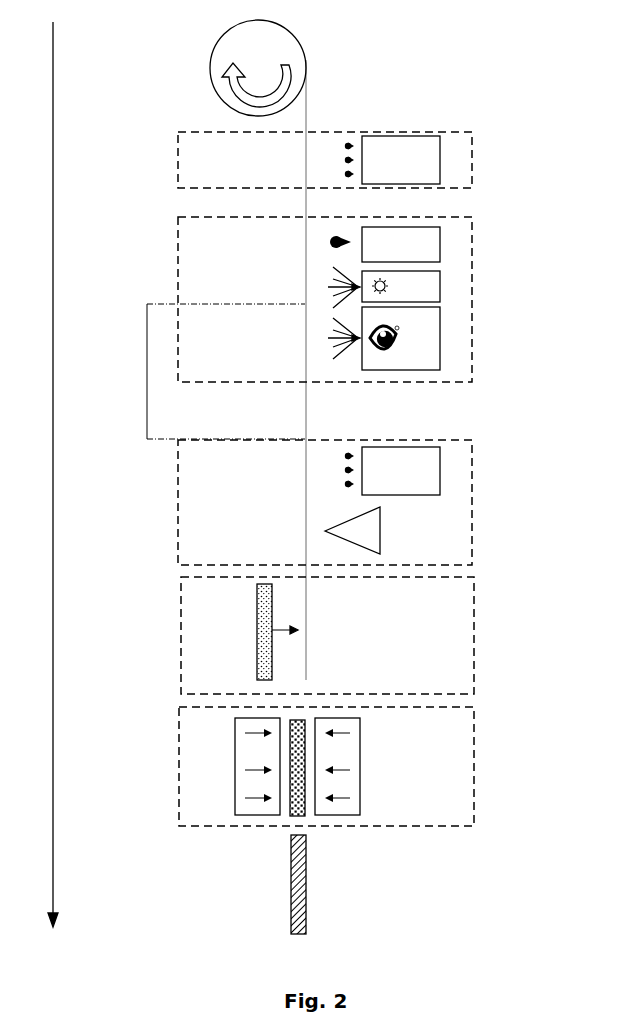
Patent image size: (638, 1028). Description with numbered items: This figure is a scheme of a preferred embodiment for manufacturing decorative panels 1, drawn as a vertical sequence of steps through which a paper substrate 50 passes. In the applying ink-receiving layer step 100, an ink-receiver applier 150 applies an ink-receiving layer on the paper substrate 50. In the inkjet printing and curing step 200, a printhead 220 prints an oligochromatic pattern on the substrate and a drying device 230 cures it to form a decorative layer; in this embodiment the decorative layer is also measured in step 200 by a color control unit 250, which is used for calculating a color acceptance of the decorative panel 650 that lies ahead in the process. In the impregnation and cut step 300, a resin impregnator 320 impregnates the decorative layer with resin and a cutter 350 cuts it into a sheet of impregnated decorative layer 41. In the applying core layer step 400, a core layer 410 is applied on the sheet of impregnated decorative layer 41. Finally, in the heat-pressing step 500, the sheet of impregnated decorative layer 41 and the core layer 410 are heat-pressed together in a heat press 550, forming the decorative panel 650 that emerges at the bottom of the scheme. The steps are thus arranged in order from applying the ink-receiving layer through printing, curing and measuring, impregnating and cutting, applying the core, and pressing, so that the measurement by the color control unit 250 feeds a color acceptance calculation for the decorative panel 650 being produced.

The decorative panels 1 is at (53, 67).
The paper substrate 50 is at (237, 42).
The applying ink-receiving layer step 100 is at (178, 158).
The ink-receiver applier 150 is at (425, 157).
The inkjet printing and curing step 200 is at (178, 241).
The printhead 220 is at (422, 244).
The drying device 230 is at (420, 287).
The color control unit 250 is at (420, 336).
The impregnation and cut step 300 is at (178, 486).
The resin impregnator 320 is at (415, 468).
The cutter 350 is at (380, 531).
The applying core layer step 400 is at (181, 637).
The core layer 410 is at (257, 612).
The sheet of impregnated decorative layer 41 is at (306, 625).
The heat-pressing step 500 is at (179, 740).
The heat press 550 is at (262, 759).
The decorative panel 650 is at (306, 882).